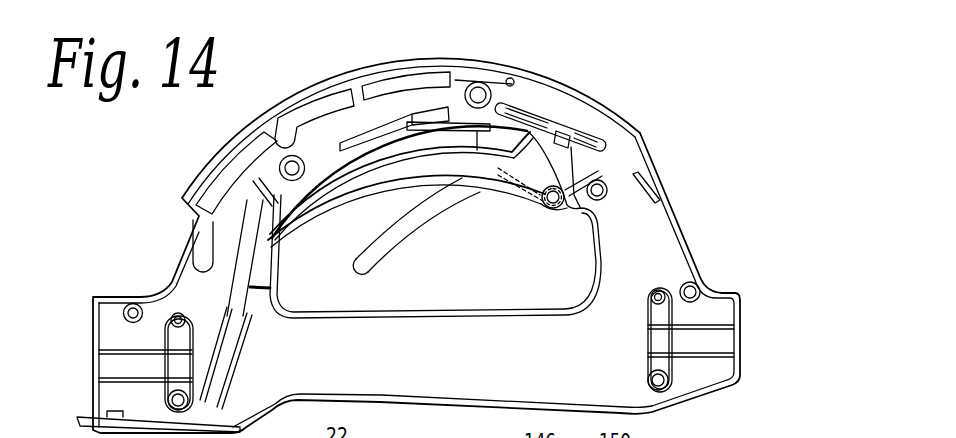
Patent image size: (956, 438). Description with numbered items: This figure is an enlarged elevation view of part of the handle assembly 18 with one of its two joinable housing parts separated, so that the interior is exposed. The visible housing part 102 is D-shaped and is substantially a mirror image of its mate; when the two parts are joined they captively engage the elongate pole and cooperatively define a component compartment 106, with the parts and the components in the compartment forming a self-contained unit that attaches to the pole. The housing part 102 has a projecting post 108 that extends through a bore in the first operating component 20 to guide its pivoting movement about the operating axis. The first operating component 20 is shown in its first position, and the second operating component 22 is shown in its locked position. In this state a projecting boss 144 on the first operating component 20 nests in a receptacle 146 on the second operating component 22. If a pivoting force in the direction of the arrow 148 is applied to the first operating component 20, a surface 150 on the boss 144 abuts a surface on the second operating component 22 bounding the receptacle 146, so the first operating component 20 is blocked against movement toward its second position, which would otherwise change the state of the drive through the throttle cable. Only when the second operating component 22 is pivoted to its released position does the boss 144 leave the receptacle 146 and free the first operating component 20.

The handle assembly 18 is at (715, 254).
The first operating component 20 is at (373, 242).
The second operating component 22 is at (323, 103).
The housing part 102 is at (647, 250).
The component compartment 106 is at (614, 383).
The projecting post 108 is at (541, 210).
The projecting boss 144 is at (568, 127).
The receptacle 146 is at (546, 146).
The arrow 148 is at (378, 188).
The surface 150 is at (603, 170).